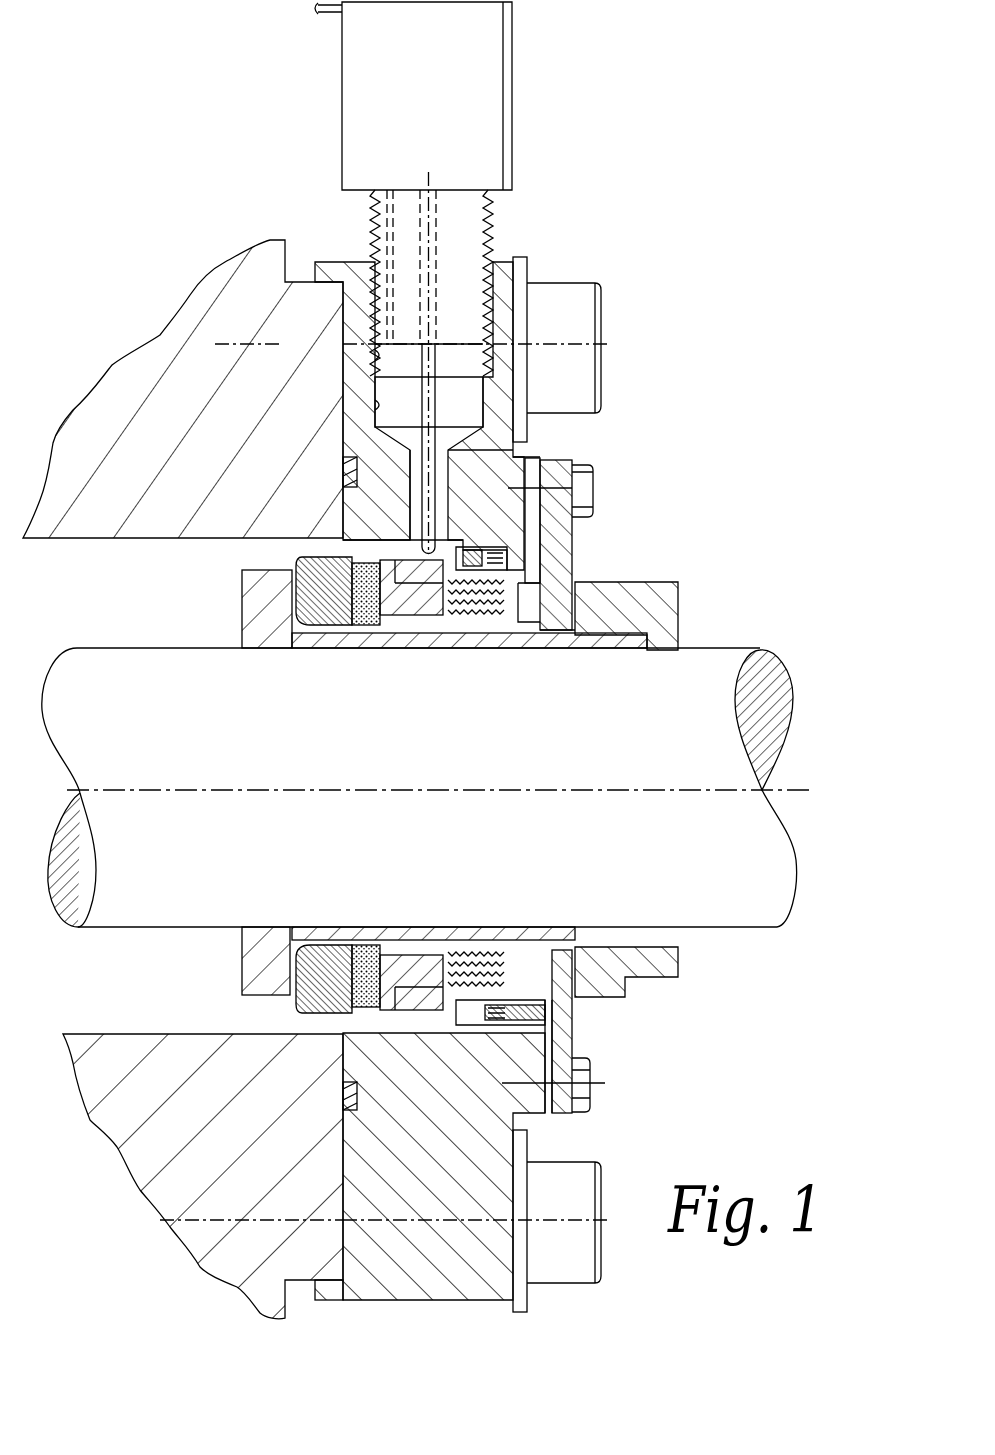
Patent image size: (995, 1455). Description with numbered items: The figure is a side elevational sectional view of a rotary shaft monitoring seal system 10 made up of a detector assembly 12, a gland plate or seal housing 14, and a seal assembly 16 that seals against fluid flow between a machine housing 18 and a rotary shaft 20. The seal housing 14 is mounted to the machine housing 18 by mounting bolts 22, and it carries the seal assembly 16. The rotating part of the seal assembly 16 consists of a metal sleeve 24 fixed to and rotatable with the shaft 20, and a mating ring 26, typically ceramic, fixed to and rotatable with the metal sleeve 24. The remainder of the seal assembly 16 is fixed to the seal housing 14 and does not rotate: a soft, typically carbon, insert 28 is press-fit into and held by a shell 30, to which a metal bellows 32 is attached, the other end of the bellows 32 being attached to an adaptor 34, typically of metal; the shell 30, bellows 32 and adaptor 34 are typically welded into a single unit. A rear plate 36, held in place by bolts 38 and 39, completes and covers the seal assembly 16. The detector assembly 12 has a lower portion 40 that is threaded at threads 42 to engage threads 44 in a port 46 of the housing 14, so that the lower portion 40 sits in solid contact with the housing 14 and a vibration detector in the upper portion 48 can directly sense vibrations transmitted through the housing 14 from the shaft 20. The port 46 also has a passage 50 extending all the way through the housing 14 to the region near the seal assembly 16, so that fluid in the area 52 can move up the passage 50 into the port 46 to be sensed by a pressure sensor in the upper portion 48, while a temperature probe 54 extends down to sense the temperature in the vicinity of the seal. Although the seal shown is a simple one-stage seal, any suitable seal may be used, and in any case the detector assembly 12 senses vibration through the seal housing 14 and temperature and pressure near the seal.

The rotary shaft monitoring seal system 10 is at (636, 80).
The detector assembly 12 is at (515, 142).
The gland plate or seal housing 14 is at (497, 264).
The seal assembly 16 is at (572, 488).
The machine housing 18 is at (172, 310).
The rotary shaft 20 is at (762, 833).
The mounting bolts 22 is at (600, 285).
The metal sleeve 24 is at (242, 615).
The mating ring 26 is at (320, 630).
The insert 28 is at (388, 630).
The shell 30 is at (437, 630).
The metal bellows 32 is at (495, 620).
The adaptor 34 is at (495, 1023).
The rear plate 36 is at (482, 542).
The bolt 38 is at (594, 516).
The bolt 39 is at (590, 1110).
The lower portion 40 is at (368, 222).
The threads 42 is at (370, 240).
The threads 44 is at (385, 356).
The port 46 is at (375, 412).
The upper portion 48 is at (342, 78).
The passage 50 is at (412, 460).
The area 52 is at (395, 540).
The temperature probe 54 is at (436, 422).